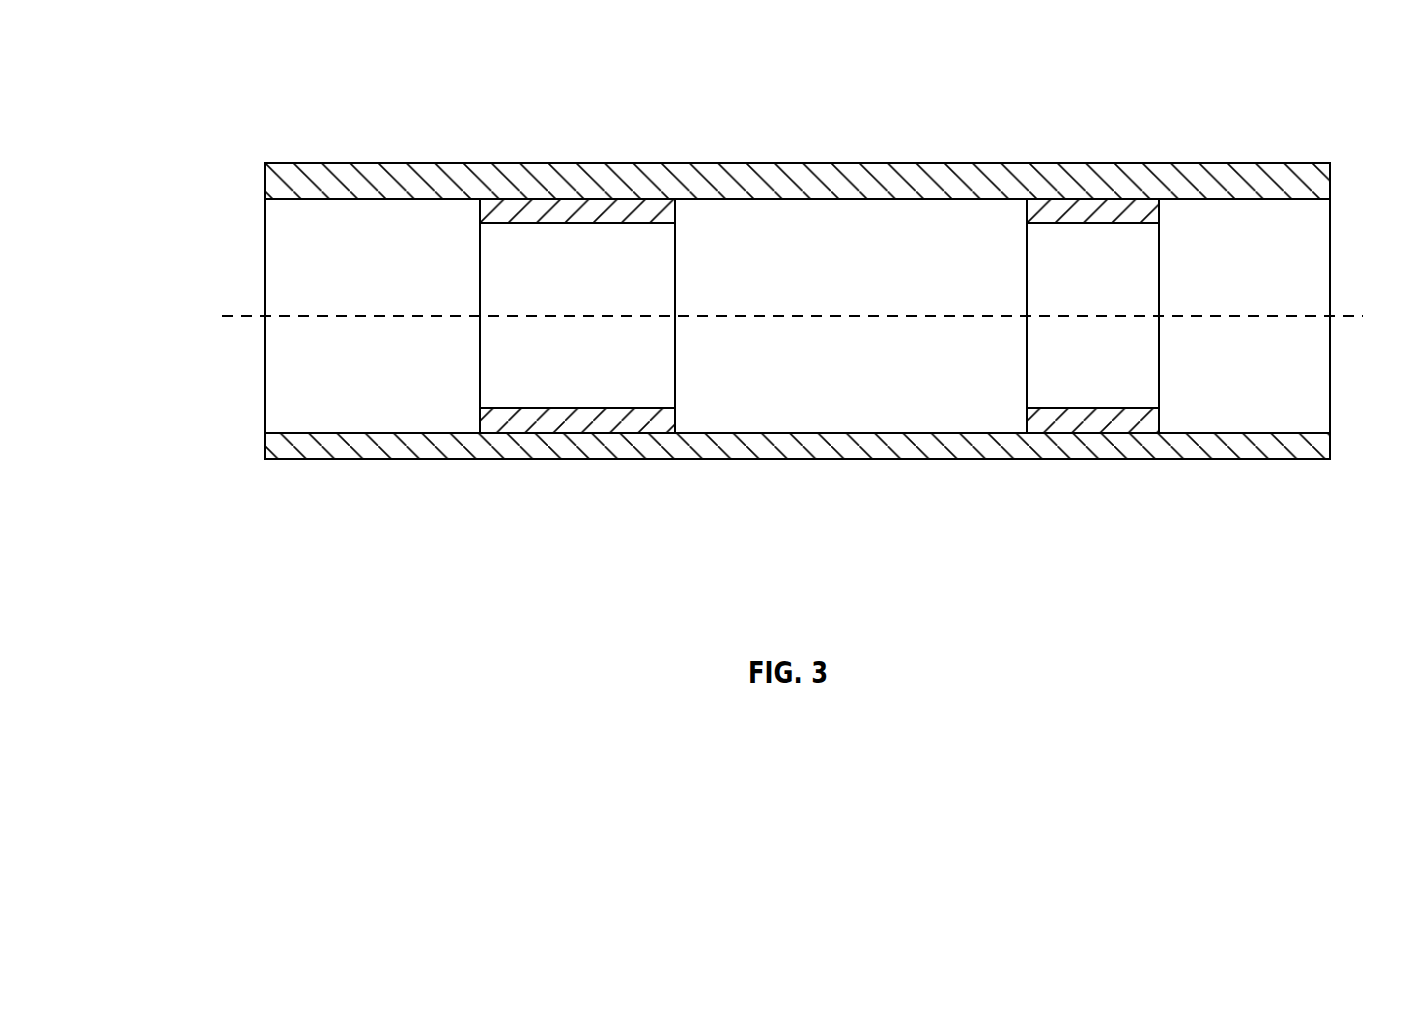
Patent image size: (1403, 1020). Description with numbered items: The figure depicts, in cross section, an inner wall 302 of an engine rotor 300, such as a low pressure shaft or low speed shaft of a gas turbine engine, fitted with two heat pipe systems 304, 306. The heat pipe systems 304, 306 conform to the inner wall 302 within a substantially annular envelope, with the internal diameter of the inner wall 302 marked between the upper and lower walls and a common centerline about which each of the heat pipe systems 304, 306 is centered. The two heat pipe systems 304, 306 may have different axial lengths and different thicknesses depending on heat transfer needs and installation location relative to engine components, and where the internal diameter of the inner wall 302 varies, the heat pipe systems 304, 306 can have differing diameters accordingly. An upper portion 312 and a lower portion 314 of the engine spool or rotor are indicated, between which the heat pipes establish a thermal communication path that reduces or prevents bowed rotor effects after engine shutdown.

The engine rotor 300 is at (775, 301).
The inner wall 302 is at (341, 200).
The heat pipe system 304 is at (578, 210).
The heat pipe system 306 is at (1078, 210).
The upper portion 312 is at (488, 145).
The lower portion 314 is at (504, 470).